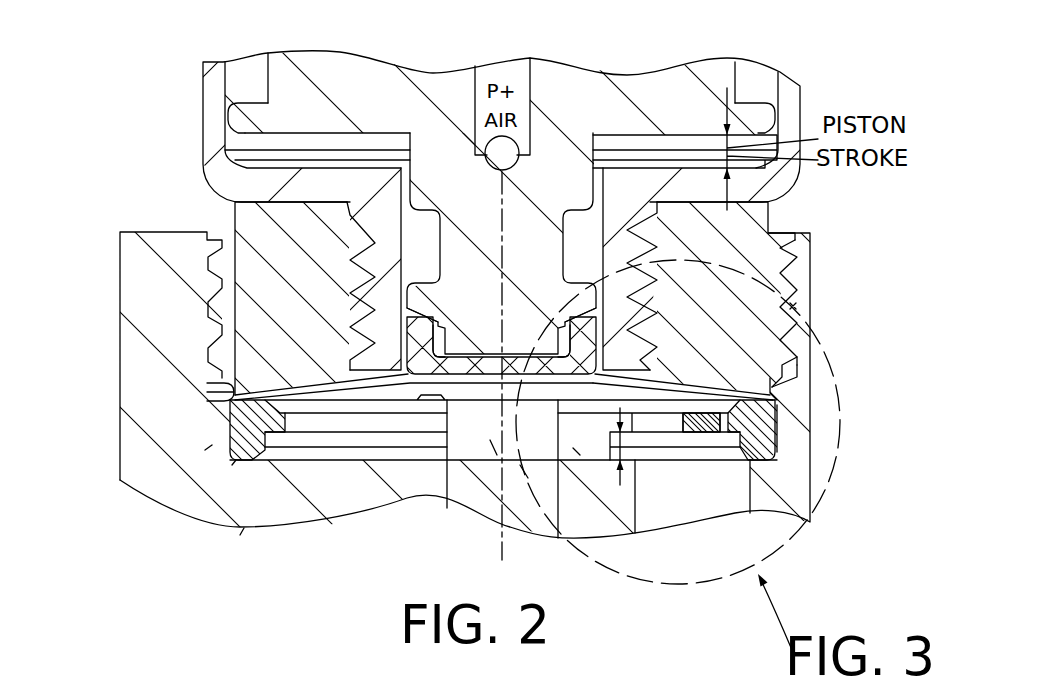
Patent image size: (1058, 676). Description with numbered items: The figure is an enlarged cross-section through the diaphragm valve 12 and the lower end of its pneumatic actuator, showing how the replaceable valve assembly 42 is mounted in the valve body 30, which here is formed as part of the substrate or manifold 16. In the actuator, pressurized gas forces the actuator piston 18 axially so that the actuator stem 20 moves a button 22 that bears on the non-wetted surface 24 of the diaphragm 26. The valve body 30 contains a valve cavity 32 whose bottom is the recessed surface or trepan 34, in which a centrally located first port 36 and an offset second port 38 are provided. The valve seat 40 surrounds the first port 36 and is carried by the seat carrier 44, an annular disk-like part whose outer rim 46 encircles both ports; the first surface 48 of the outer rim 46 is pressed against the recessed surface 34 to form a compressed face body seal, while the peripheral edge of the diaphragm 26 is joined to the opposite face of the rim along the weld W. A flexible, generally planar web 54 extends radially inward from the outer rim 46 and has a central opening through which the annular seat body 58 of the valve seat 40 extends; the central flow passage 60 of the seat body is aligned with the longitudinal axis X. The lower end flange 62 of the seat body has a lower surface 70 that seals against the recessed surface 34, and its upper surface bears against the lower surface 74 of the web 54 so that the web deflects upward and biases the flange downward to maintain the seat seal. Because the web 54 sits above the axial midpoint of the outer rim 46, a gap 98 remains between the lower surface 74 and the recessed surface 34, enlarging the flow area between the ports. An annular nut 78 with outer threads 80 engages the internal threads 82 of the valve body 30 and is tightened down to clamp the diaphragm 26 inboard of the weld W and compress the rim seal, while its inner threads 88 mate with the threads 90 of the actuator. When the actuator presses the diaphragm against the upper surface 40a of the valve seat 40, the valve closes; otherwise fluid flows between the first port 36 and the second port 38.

The diaphragm valve 12 is at (122, 490).
The substrate or manifold 16 is at (240, 535).
The actuator piston 18 is at (706, 72).
The actuator stem 20 is at (470, 254).
The button 22 is at (483, 355).
The non-wetted surface of diaphragm 24 is at (312, 385).
The diaphragm 26 is at (675, 375).
The valve body 30 is at (800, 378).
The valve cavity 32 is at (775, 452).
The recessed surface or trepan 34 is at (300, 464).
The first port 36 is at (497, 455).
The second port 38 is at (692, 445).
The valve seat 40 is at (428, 458).
The upper surface of valve seat 40a is at (437, 345).
The valve assembly 42 is at (205, 450).
The seat carrier 44 is at (232, 465).
The outer rim 46 is at (762, 424).
The first surface of outer rim 48 is at (258, 470).
The web 54 is at (728, 420).
The annular seat body 58 is at (573, 448).
The central flow passage 60 is at (470, 445).
The lower end flange 62 is at (370, 452).
The lower surface of flange 70 is at (522, 465).
The lower surface of web 74 is at (708, 445).
The annular nut 78 is at (772, 216).
The outer threads of nut 80 is at (788, 286).
The internal threads of valve body 82 is at (797, 306).
The inner threads of nut 88 is at (368, 282).
The threads of actuator 90 is at (361, 258).
The gap 98 is at (628, 443).
The weld W is at (770, 420).
The longitudinal axis X is at (503, 218).